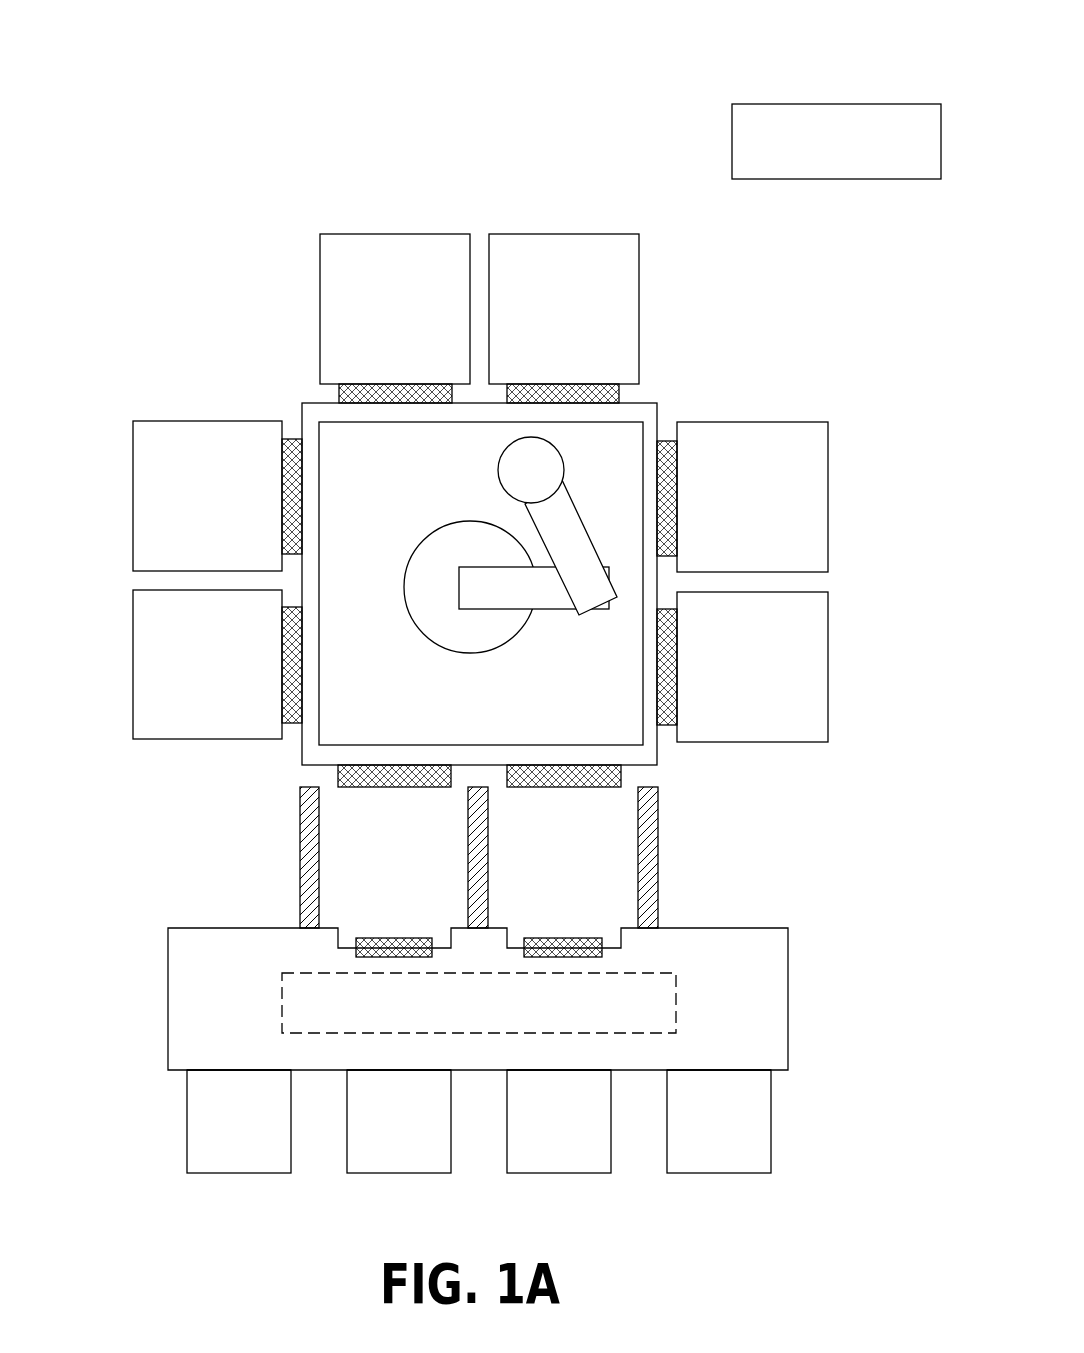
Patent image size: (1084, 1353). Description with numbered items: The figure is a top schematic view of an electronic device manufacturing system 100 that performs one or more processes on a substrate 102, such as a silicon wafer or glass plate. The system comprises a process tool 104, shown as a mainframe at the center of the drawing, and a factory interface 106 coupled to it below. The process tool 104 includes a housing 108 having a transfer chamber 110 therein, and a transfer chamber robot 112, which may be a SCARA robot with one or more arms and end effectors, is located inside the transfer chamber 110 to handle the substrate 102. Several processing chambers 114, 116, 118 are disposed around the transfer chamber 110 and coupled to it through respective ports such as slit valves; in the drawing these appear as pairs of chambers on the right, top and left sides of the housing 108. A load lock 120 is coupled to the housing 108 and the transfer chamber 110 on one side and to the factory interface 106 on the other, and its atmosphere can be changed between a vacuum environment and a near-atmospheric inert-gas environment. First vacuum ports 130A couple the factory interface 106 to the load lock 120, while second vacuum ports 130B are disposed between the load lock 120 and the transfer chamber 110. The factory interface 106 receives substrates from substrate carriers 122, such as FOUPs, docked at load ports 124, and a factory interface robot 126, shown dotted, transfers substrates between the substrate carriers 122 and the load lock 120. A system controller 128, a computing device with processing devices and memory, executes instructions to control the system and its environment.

The electronic device manufacturing system 100 is at (127, 82).
The substrate 102 is at (557, 526).
The process tool 104 is at (693, 380).
The factory interface 106 is at (797, 943).
The housing 108 is at (302, 403).
The transfer chamber 110 is at (481, 583).
The transfer chamber robot 112 is at (432, 533).
The processing chamber 114 is at (752, 582).
The processing chamber 116 is at (479, 309).
The processing chamber 118 is at (207, 580).
The load lock 120 is at (667, 842).
The substrate carrier 122 is at (238, 1173).
The load port 124 is at (238, 1070).
The factory interface robot 126 is at (676, 1003).
The system controller 128 is at (836, 141).
The first vacuum port 130A is at (337, 937).
The second vacuum port 130B is at (337, 775).